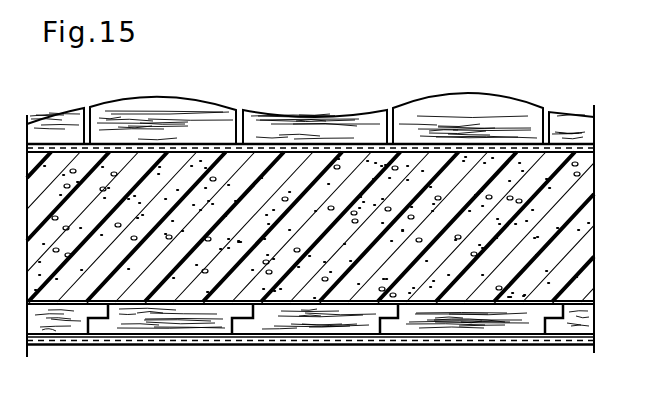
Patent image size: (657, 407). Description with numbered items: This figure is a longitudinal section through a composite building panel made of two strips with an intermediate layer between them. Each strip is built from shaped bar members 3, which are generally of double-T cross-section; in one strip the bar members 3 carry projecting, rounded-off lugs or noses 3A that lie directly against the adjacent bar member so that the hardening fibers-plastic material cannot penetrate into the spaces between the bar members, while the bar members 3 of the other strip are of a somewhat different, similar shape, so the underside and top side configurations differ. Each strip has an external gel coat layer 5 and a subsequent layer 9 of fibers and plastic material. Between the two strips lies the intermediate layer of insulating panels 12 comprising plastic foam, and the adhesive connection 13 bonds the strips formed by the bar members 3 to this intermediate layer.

The shaped bar members 3 is at (255, 130).
The projecting rounded-off lugs or noses 3A is at (389, 327).
The external gel coat layer 5 is at (53, 345).
The layer of fibers and plastic material 9 is at (350, 151).
The insulating panels 12 is at (440, 206).
The adhesive connection 13 is at (481, 304).